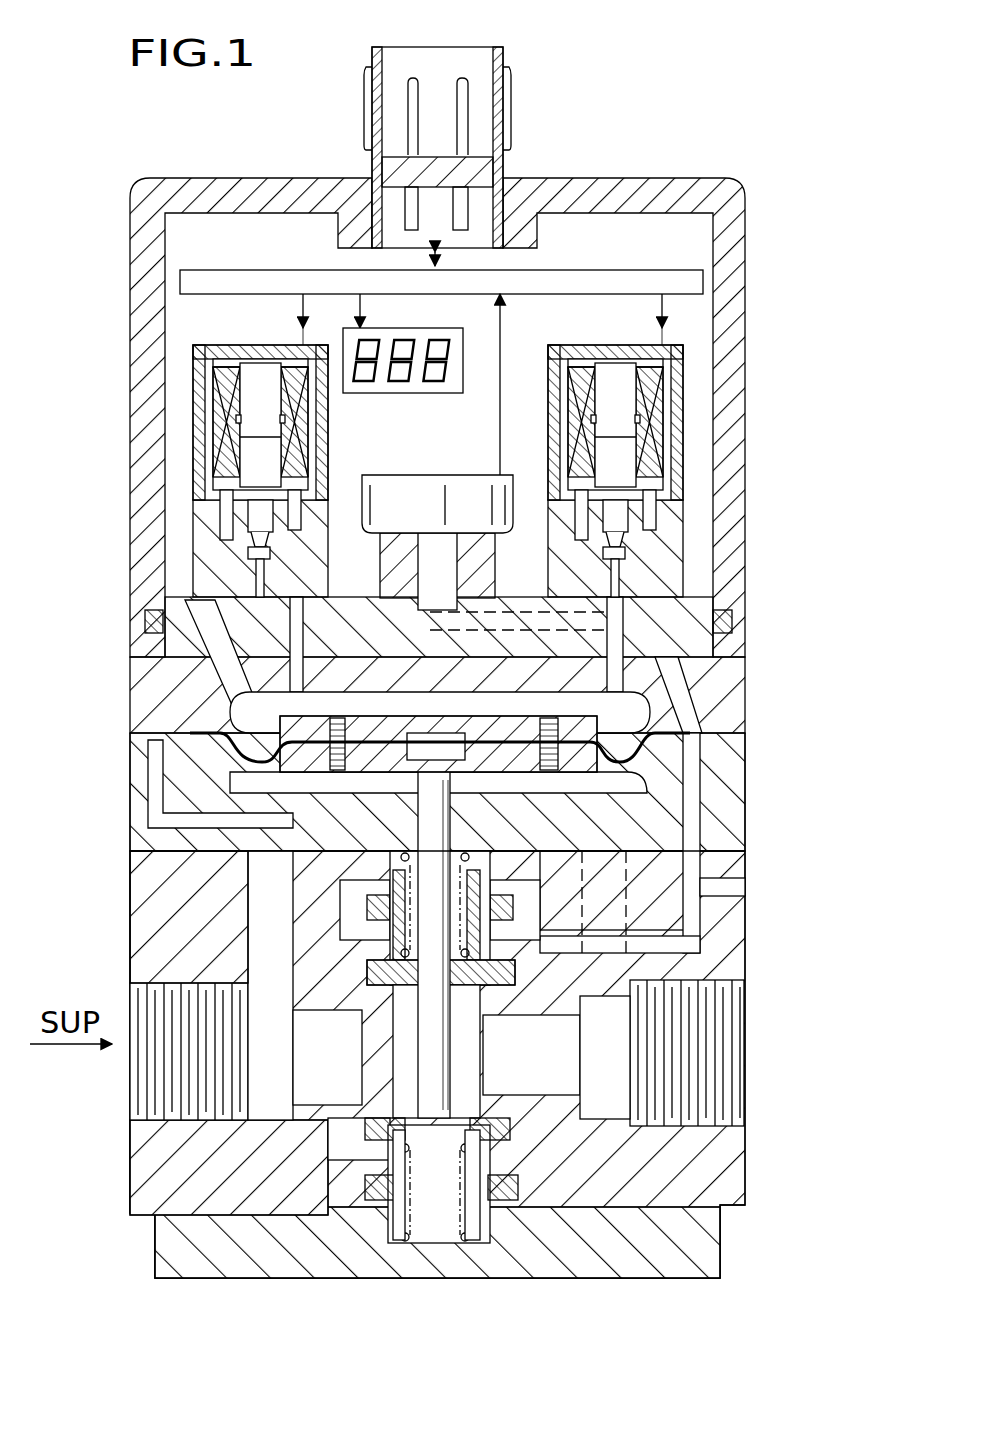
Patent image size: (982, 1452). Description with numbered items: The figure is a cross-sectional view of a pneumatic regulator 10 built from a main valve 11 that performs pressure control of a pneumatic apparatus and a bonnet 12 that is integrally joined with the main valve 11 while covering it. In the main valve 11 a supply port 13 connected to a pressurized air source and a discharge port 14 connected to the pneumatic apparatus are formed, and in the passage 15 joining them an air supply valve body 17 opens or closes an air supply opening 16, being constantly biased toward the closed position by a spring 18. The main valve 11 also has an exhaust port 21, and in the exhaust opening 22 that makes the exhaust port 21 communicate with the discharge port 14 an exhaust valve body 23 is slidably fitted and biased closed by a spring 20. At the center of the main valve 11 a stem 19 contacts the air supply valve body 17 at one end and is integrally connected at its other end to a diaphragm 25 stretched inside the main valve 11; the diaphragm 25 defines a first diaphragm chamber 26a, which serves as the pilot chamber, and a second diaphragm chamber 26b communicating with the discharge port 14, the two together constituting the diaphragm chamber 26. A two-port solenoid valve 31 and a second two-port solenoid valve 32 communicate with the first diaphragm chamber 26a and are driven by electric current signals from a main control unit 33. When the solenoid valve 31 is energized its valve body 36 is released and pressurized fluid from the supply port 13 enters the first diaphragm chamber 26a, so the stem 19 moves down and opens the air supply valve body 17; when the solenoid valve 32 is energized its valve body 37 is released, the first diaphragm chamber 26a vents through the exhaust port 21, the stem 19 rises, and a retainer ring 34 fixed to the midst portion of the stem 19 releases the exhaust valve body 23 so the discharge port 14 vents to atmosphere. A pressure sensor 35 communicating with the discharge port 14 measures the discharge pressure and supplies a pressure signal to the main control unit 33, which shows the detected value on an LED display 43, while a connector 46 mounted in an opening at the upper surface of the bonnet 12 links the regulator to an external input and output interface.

The pneumatic regulator 10 is at (614, 9).
The main valve 11 is at (128, 703).
The bonnet 12 is at (128, 408).
The supply port 13 is at (142, 1122).
The discharge port 14 is at (730, 1121).
The passage 15 is at (330, 1160).
The air supply opening 16 is at (356, 1118).
The air supply valve body 17 is at (420, 1205).
The spring 18 is at (456, 1240).
The stem 19 is at (490, 1205).
The spring 20 is at (395, 858).
The exhaust port 21 is at (745, 886).
The exhaust opening 22 is at (502, 985).
The exhaust valve body 23 is at (380, 948).
The diaphragm 25 is at (270, 776).
The diaphragm chamber 26 is at (96, 650).
The first diaphragm chamber 26a is at (250, 705).
The second diaphragm chamber 26b is at (262, 822).
The two-port solenoid valve 31 is at (193, 447).
The two-port solenoid valve 32 is at (686, 440).
The main control unit 33 is at (645, 262).
The retainer ring 34 is at (466, 990).
The pressure sensor 35 is at (421, 475).
The valve body 36 is at (255, 548).
The valve body 37 is at (652, 540).
The LED display 43 is at (450, 393).
The connector 46 is at (512, 102).